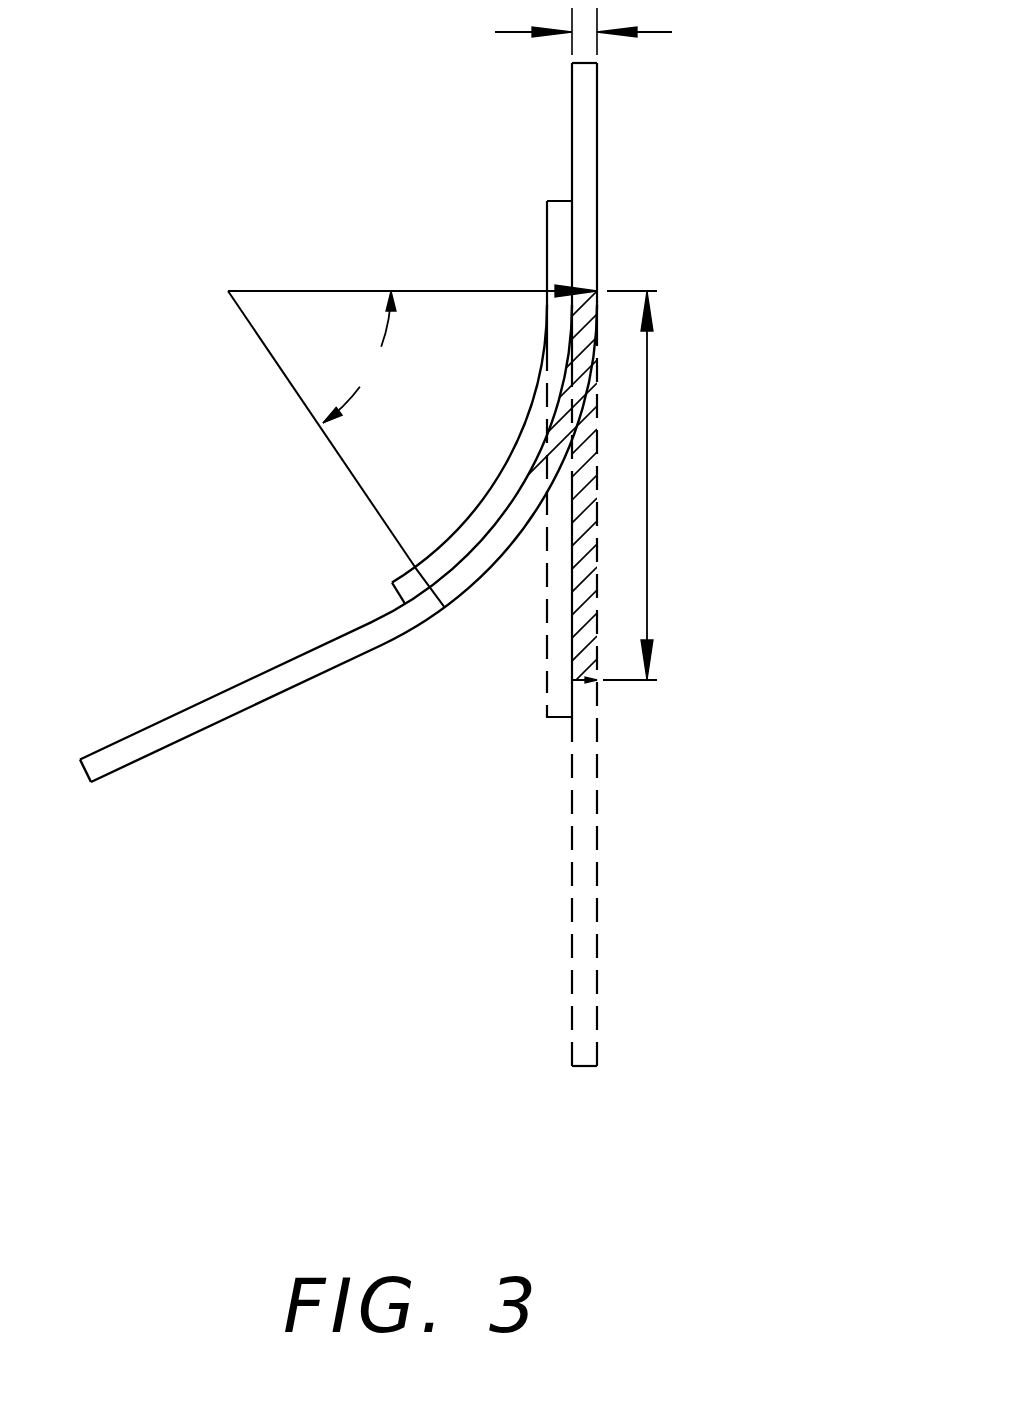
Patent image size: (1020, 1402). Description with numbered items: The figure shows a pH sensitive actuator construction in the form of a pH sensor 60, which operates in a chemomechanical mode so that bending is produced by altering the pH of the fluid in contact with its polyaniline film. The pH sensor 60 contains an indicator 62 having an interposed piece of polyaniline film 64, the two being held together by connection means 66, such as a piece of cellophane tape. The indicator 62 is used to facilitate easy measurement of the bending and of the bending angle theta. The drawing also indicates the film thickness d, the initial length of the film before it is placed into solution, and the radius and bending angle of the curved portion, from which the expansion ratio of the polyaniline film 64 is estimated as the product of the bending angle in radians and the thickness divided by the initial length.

The pH sensor 60 is at (456, 537).
The indicator 62 is at (585, 185).
The polyaniline film 64 is at (471, 584).
The connection means 66 is at (403, 593).